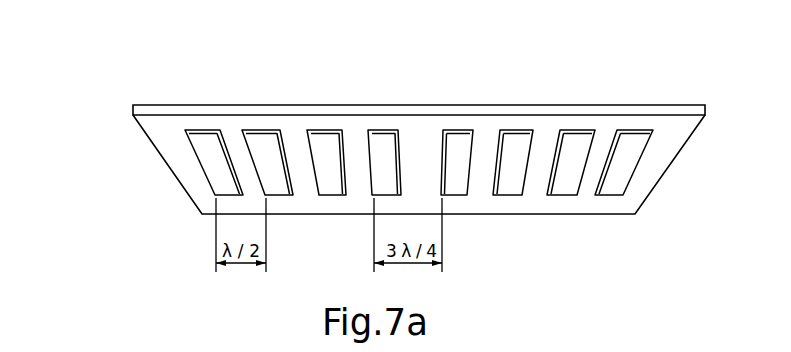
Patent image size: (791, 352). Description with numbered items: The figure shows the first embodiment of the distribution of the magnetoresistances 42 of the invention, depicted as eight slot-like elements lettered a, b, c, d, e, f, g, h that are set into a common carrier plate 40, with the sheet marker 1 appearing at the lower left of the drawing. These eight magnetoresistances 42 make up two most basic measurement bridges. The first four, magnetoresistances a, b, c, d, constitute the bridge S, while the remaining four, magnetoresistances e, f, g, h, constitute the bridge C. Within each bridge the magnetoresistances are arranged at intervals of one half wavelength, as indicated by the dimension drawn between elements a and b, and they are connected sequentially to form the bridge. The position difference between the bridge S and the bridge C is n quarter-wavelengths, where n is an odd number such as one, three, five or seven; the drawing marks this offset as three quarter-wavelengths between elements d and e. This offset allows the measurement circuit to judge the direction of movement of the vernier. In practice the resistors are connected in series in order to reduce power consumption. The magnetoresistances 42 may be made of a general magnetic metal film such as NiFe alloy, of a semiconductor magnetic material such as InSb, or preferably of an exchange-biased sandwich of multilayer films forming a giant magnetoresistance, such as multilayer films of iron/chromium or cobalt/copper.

The slotted waveguide plate 40 is at (419, 113).
The magnetoresistances 42 is at (139, 104).
The sheet marker 1 is at (10, 338).
The magnetoresistance a is at (214, 162).
The magnetoresistance b is at (267, 162).
The magnetoresistance c is at (326, 162).
The magnetoresistance d is at (384, 162).
The magnetoresistance e is at (457, 162).
The magnetoresistance f is at (513, 162).
The magnetoresistance g is at (571, 162).
The magnetoresistance h is at (624, 162).